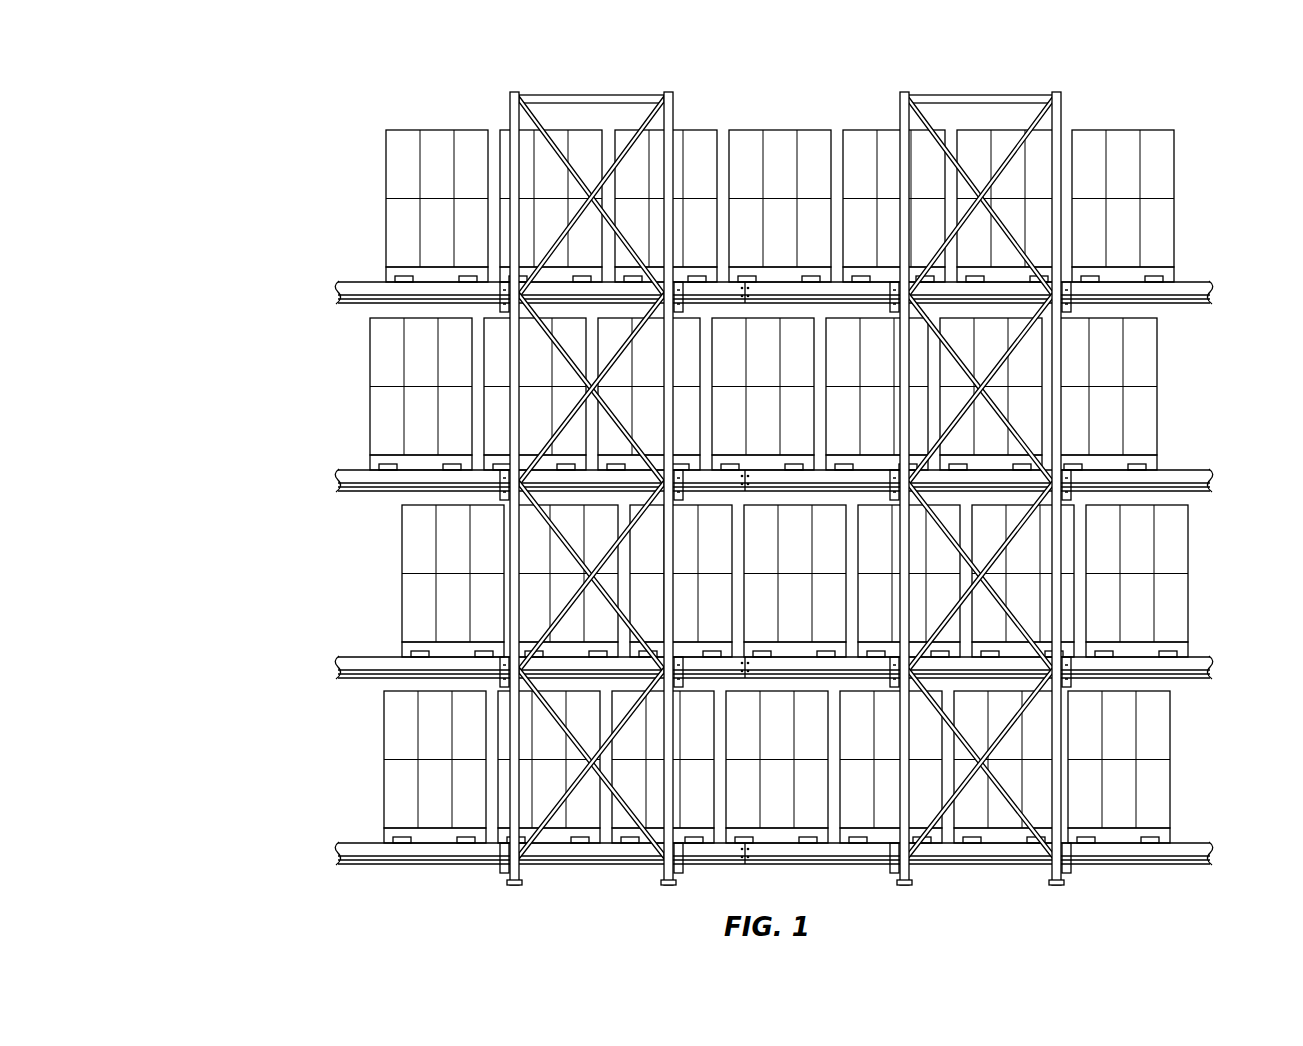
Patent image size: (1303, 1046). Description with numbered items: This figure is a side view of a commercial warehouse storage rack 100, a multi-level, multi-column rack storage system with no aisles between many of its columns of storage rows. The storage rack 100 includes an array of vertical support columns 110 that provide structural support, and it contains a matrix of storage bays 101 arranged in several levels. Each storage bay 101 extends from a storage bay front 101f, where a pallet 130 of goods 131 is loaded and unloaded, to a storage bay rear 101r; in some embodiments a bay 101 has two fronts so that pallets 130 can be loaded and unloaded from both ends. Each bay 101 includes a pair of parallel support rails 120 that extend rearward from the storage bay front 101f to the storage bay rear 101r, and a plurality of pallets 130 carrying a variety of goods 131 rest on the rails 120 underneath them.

The storage rack 100 is at (188, 292).
The storage bay 101 is at (355, 192).
The storage bay front 101f is at (360, 868).
The storage bay rear 101r is at (1184, 880).
The vertical support column 110 is at (510, 98).
The support rail 120 is at (1182, 291).
The pallet 130 is at (425, 465).
The goods 131 is at (403, 128).